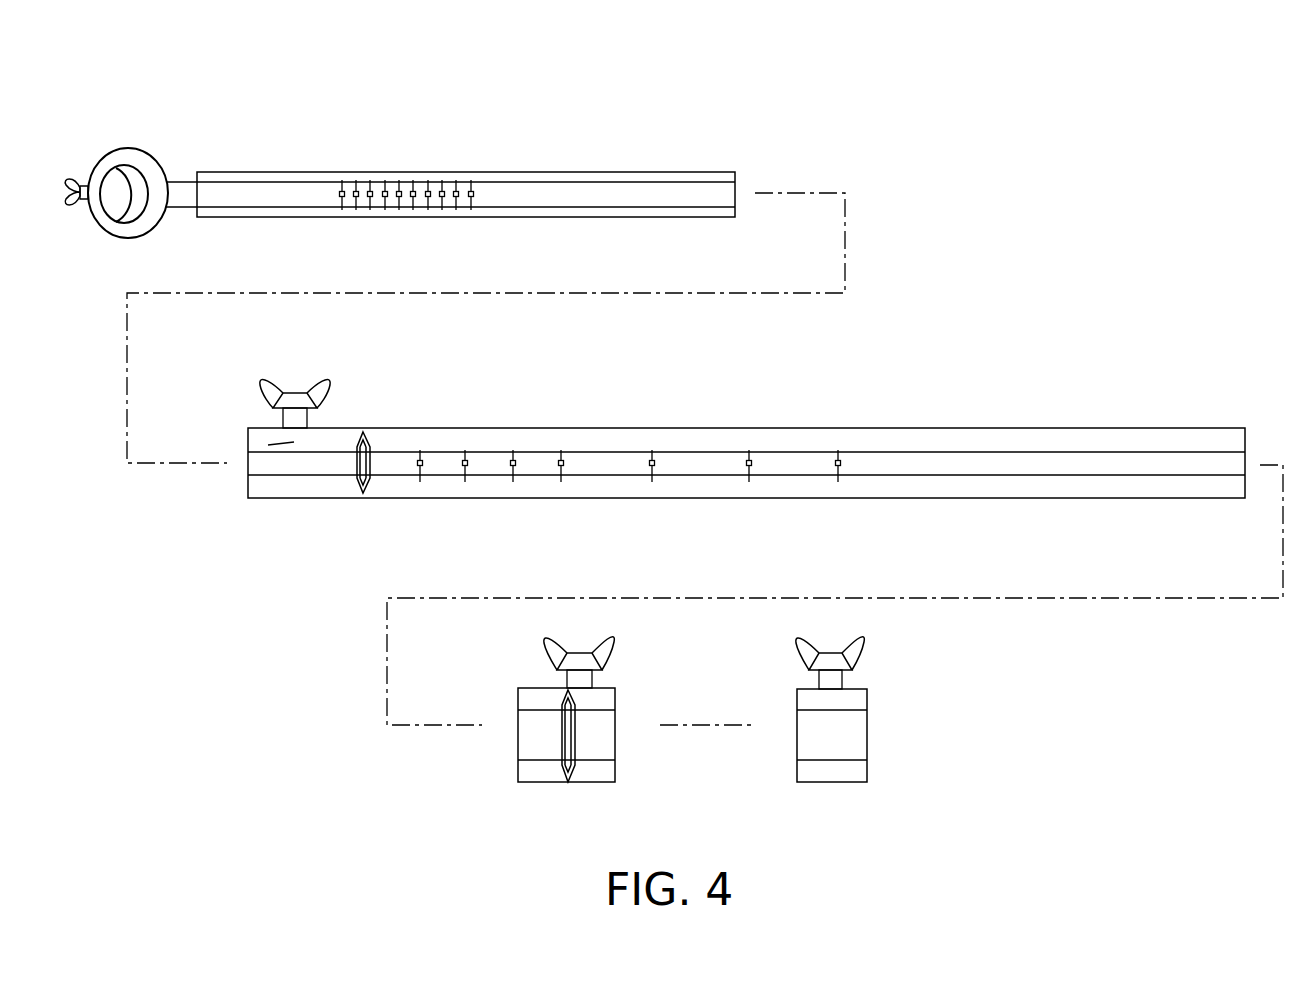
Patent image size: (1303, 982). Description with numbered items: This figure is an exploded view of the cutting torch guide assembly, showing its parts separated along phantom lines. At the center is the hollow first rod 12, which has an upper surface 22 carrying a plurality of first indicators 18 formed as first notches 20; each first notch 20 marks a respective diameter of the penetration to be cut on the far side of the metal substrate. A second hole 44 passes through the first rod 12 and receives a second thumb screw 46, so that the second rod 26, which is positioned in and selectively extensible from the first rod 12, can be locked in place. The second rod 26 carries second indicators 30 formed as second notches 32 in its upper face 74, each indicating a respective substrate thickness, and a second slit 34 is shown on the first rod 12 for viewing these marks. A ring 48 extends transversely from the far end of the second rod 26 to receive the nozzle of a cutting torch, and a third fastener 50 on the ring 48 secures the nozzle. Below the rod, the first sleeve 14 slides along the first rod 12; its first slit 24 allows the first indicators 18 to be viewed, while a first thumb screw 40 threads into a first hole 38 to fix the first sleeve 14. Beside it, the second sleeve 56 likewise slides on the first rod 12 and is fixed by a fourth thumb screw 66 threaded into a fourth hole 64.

The first rod 12 is at (1065, 428).
The first sleeve 14 is at (613, 745).
The first indicators 18 is at (749, 449).
The first notches 20 is at (652, 476).
The upper surface 22 is at (953, 469).
The first slit 24 is at (567, 723).
The second rod 26 is at (620, 172).
The second indicators 30 is at (428, 181).
The second notches 32 is at (428, 209).
The second slit 34 is at (364, 460).
The first hole 38 is at (577, 701).
The first thumb screw 40 is at (607, 645).
The second hole 44 is at (257, 445).
The second thumb screw 46 is at (273, 380).
The ring 48 is at (121, 152).
The third fastener 50 is at (70, 178).
The second sleeve 56 is at (867, 725).
The fourth hole 64 is at (858, 692).
The fourth thumb screw 66 is at (855, 643).
The upper face 74 is at (466, 187).